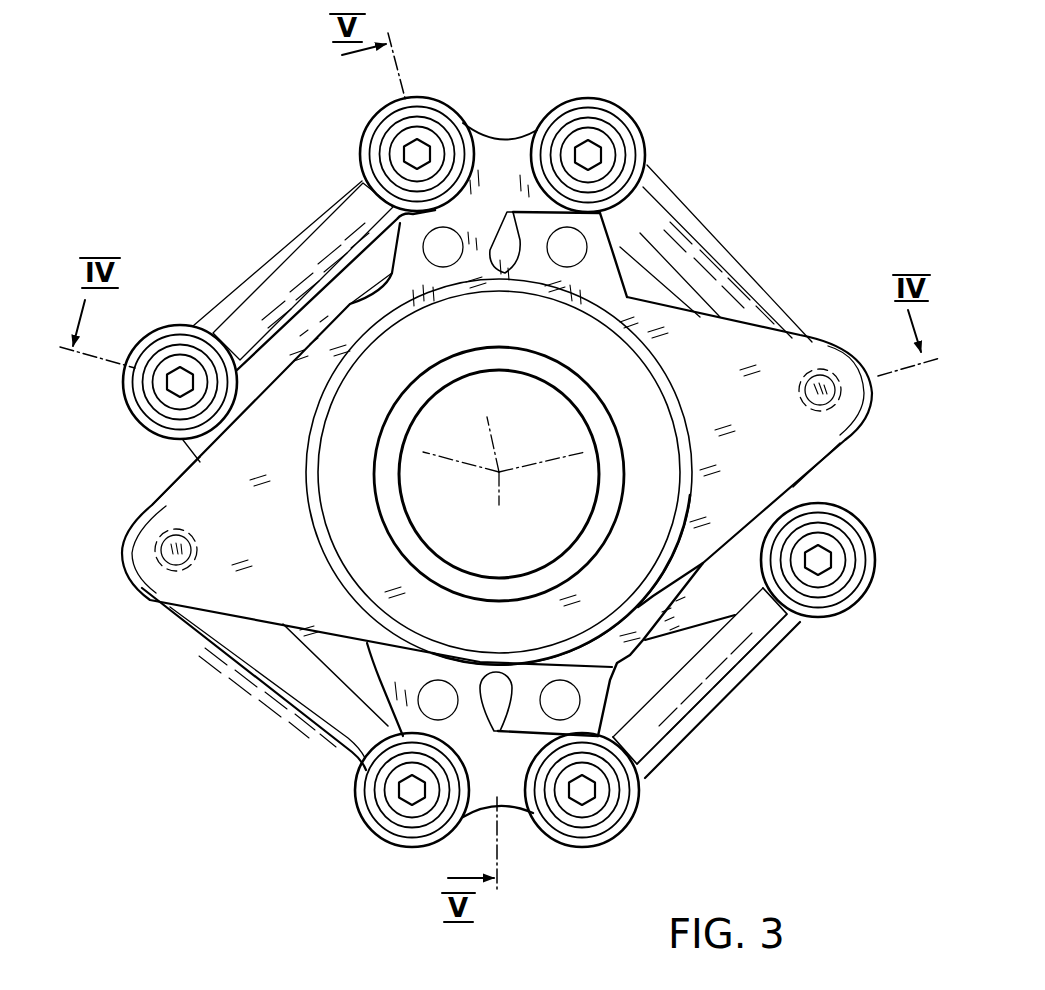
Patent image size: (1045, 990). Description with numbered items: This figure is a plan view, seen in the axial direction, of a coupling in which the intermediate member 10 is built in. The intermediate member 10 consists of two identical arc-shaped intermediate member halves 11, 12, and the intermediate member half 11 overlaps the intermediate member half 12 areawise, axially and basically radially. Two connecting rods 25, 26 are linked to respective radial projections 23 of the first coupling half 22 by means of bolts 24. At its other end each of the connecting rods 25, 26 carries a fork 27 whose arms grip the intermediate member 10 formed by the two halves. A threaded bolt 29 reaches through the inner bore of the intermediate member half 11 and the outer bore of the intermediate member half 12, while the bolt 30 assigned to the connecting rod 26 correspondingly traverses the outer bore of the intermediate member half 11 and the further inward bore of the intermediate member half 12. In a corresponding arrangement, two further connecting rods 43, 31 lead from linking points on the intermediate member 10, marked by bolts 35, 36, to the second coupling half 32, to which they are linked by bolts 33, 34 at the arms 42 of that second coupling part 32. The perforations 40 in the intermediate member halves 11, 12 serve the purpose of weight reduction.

The intermediate member 10 is at (531, 237).
The intermediate member half 11 is at (483, 785).
The intermediate member half 12 is at (594, 272).
The first coupling half 22 is at (226, 511).
The radial projections 23 is at (753, 350).
The bolts 24 is at (165, 570).
The connecting rod 25 is at (288, 677).
The connecting rod 26 is at (720, 278).
The fork 27 is at (370, 114).
The threaded bolt 29 is at (402, 795).
The bolt 30 is at (597, 153).
The connecting rod 31 is at (313, 250).
The second coupling half 32 is at (284, 354).
The bolt 33 is at (822, 560).
The bolt 34 is at (175, 385).
The bolt 35 is at (586, 800).
The bolt 36 is at (421, 145).
The perforations 40 is at (555, 256).
The arms 42 is at (200, 457).
The connecting rod 43 is at (708, 678).